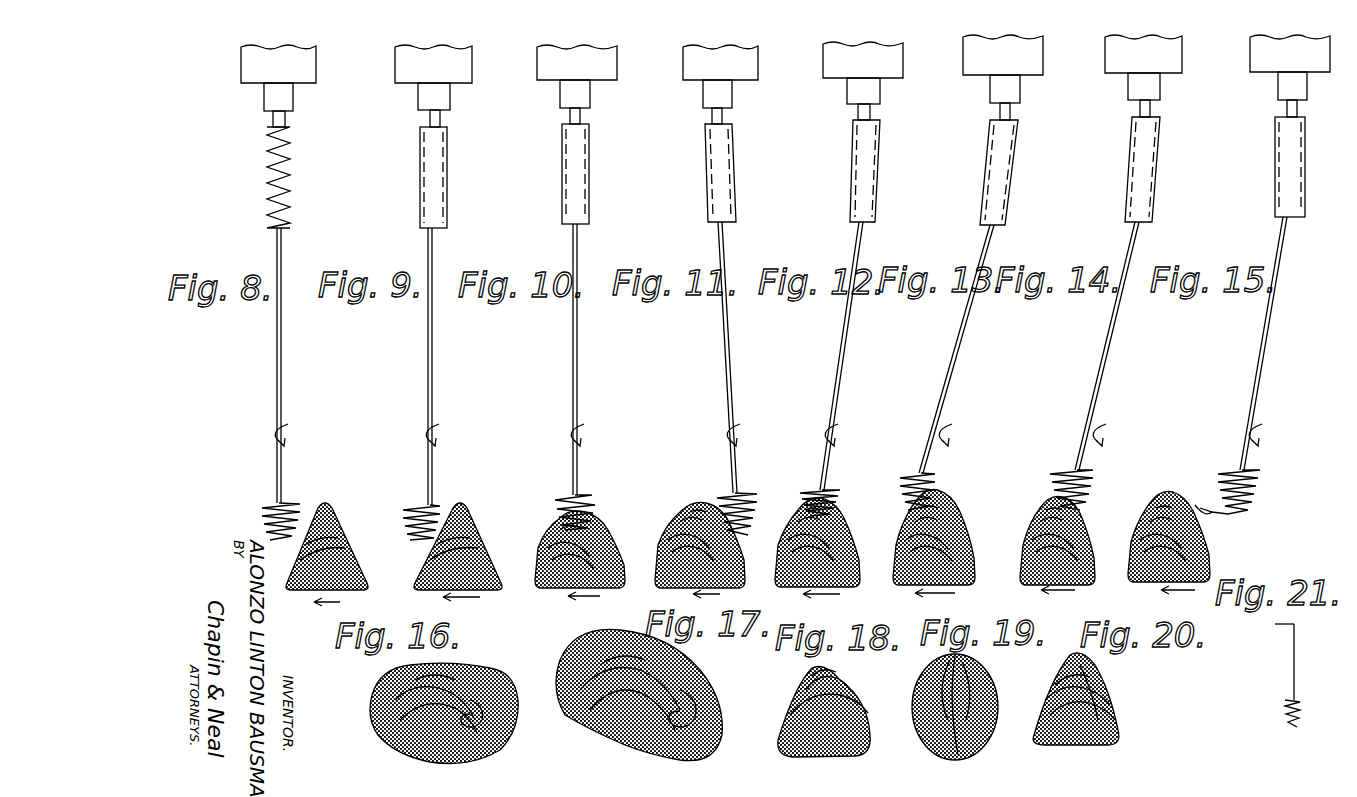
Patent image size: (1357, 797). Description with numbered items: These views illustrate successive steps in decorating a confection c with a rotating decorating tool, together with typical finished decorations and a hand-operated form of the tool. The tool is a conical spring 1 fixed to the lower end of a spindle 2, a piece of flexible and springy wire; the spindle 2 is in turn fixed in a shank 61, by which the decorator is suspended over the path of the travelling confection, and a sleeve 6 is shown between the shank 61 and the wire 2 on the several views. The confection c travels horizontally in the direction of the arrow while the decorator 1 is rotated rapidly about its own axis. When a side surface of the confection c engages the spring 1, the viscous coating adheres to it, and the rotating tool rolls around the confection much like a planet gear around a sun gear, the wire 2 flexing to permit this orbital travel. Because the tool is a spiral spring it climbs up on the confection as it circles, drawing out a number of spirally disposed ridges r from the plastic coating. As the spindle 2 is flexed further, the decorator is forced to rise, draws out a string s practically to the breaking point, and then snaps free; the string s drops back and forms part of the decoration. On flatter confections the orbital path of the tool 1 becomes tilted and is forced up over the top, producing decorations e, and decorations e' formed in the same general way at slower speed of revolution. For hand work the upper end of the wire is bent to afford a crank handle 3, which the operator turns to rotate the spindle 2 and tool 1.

In FIG. 8, the shank 61 is at (290, 100).
In FIG. 9, the shank 61 is at (448, 99).
In FIG. 10, the shank 61 is at (590, 99).
In FIG. 11, the shank 61 is at (732, 99).
In FIG. 12, the shank 61 is at (880, 97).
In FIG. 13, the shank 61 is at (1020, 97).
In FIG. 14, the shank 61 is at (1155, 95).
In FIG. 15, the shank 61 is at (1280, 90).
In FIG. 8, the spring sleeve 6 is at (292, 181).
In FIG. 9, the spring sleeve 6 is at (447, 184).
In FIG. 10, the spring sleeve 6 is at (589, 180).
In FIG. 11, the spring sleeve 6 is at (733, 182).
In FIG. 12, the spring sleeve 6 is at (875, 180).
In FIG. 13, the spring sleeve 6 is at (1010, 180).
In FIG. 14, the spring sleeve 6 is at (1152, 180).
In FIG. 15, the spring sleeve 6 is at (1277, 167).
In FIG. 8, the spindle 2 is at (278, 379).
In FIG. 9, the spindle 2 is at (428, 378).
In FIG. 10, the spindle 2 is at (575, 385).
In FIG. 11, the spindle 2 is at (728, 380).
In FIG. 12, the spindle 2 is at (832, 394).
In FIG. 13, the spindle 2 is at (938, 394).
In FIG. 14, the spindle 2 is at (1098, 386).
In FIG. 15, the spindle 2 is at (1258, 385).
In FIG. 21, the spindle 2 is at (1294, 666).
In FIG. 8, the conical spring 1 is at (265, 506).
In FIG. 9, the conical spring 1 is at (412, 504).
In FIG. 10, the conical spring 1 is at (560, 499).
In FIG. 11, the conical spring 1 is at (748, 502).
In FIG. 12, the conical spring 1 is at (838, 494).
In FIG. 13, the conical spring 1 is at (933, 476).
In FIG. 14, the conical spring 1 is at (1086, 473).
In FIG. 15, the conical spring 1 is at (1226, 474).
In FIG. 21, the conical spring 1 is at (1285, 710).
In FIG. 8, the confection c is at (340, 514).
In FIG. 9, the confection c is at (482, 526).
In FIG. 10, the confection c is at (607, 545).
In FIG. 11, the confection c is at (704, 506).
In FIG. 12, the confection c is at (817, 542).
In FIG. 13, the confection c is at (934, 538).
In FIG. 14, the confection c is at (1057, 540).
In FIG. 15, the confection c is at (1169, 536).
In FIG. 18, the confection c is at (865, 742).
In FIG. 19, the confection c is at (994, 734).
In FIG. 20, the confection c is at (1120, 712).
In FIG. 11, the spirally disposed ridges r is at (680, 524).
In FIG. 12, the spirally disposed ridges r is at (842, 524).
In FIG. 13, the spirally disposed ridges r is at (950, 510).
In FIG. 14, the spirally disposed ridges r is at (1036, 512).
In FIG. 15, the spirally disposed ridges r is at (1150, 516).
In FIG. 18, the spirally disposed ridges r is at (800, 673).
In FIG. 20, the spirally disposed ridges r is at (1050, 676).
In FIG. 15, the string s is at (1212, 512).
In FIG. 19, the string s is at (966, 750).
In FIG. 20, the string s is at (1110, 680).
In FIG. 16, the decorations e is at (444, 706).
In FIG. 17, the decorations e' is at (635, 694).
In FIG. 21, the crank handle 3 is at (1275, 624).